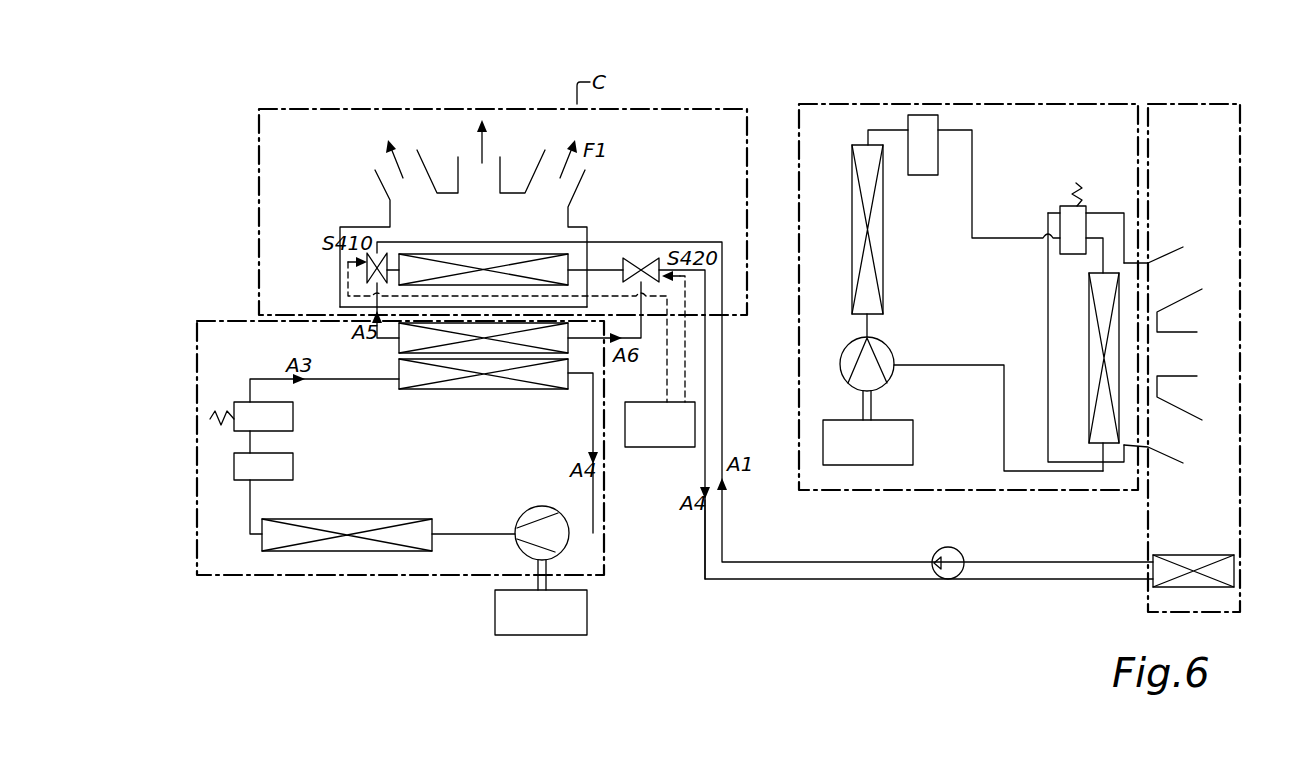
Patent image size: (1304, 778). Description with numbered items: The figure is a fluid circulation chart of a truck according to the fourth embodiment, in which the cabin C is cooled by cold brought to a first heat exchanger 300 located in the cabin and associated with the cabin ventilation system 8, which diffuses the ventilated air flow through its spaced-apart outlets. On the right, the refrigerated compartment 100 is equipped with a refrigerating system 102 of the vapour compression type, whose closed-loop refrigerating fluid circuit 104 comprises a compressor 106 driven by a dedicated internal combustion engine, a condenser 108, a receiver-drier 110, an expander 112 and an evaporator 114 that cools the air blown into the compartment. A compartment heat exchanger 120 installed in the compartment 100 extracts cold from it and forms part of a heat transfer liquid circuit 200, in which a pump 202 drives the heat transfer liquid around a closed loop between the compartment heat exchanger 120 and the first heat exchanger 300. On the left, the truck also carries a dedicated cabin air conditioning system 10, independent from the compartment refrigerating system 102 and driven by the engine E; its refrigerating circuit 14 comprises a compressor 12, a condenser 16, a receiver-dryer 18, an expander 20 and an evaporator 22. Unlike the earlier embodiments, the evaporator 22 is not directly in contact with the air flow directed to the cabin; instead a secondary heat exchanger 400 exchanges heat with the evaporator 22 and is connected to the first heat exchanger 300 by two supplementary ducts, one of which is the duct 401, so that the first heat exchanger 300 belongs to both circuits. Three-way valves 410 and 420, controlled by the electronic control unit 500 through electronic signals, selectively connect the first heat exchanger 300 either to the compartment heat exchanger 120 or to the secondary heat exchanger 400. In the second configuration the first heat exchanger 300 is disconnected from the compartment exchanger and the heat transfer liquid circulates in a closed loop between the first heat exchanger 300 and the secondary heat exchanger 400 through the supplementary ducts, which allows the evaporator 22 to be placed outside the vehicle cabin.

The ventilation system 8 is at (350, 228).
The air conditioning system 10 is at (383, 577).
The compressor 12 is at (535, 530).
The refrigerating circuit 14 is at (343, 382).
The condenser 16 is at (335, 548).
The receiver-dryer 18 is at (247, 470).
The expander 20 is at (247, 412).
The evaporator 22 is at (480, 385).
The refrigerated compartment 100 is at (1185, 104).
The refrigerating system 102 is at (1008, 104).
The refrigerating fluid circuit 104 is at (1006, 236).
The compressor 106 is at (890, 355).
The condenser 108 is at (862, 145).
The receiver-drier 110 is at (923, 128).
The expander 112 is at (1080, 232).
The evaporator 114 is at (1112, 430).
The compartment heat exchanger 120 is at (1228, 572).
The heat transfer liquid circuit 200 is at (777, 582).
The pump 202 is at (947, 548).
The first heat exchanger 300 is at (490, 268).
The secondary heat exchanger 400 is at (525, 352).
The supplementary duct 401 is at (348, 296).
The three-way valve 410 is at (372, 268).
The three-way valve 420 is at (641, 258).
The electronic control unit 500 is at (650, 432).